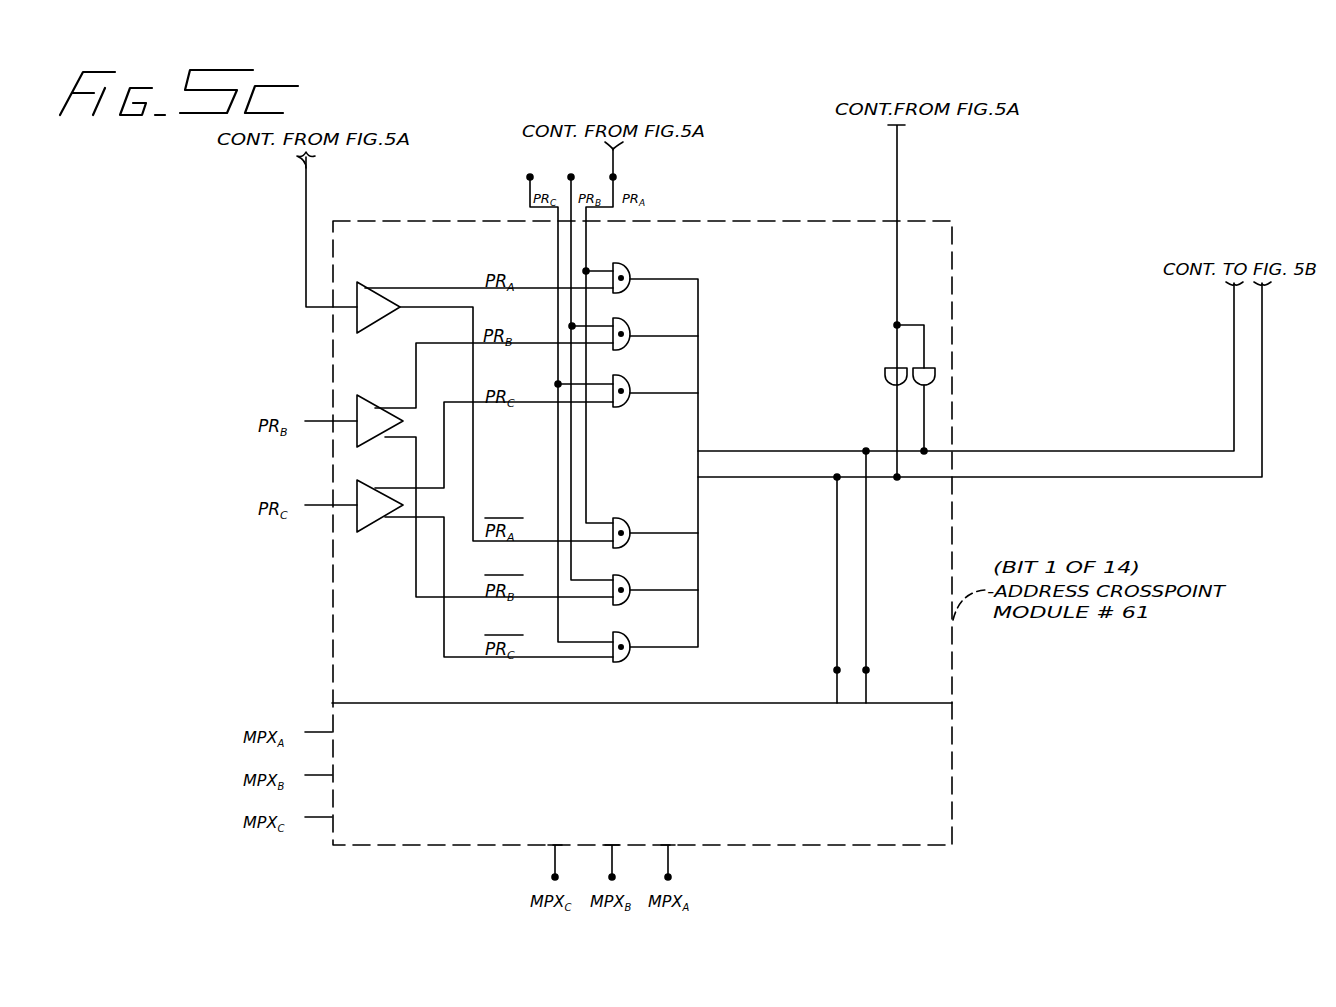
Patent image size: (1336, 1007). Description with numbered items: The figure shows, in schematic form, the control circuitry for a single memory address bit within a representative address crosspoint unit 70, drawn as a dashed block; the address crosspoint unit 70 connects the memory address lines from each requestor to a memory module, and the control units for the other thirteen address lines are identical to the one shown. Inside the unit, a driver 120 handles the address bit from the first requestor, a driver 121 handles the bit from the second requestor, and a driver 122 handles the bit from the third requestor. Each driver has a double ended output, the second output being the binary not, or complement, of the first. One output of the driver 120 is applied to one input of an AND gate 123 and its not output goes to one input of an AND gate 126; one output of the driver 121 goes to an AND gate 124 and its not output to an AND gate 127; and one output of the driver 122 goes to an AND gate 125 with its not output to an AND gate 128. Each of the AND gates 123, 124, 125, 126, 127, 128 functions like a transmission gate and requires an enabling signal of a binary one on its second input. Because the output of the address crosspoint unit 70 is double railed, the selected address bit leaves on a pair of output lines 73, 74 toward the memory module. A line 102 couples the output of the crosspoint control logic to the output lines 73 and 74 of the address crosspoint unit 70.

The address crosspoint unit 70 is at (953, 733).
The output line 73 is at (1030, 450).
The output line 74 is at (1067, 478).
The line 102 is at (897, 138).
The driver 120 is at (363, 292).
The driver 121 is at (360, 400).
The driver 122 is at (360, 485).
The AND gate 123 is at (627, 291).
The AND gate 124 is at (627, 348).
The AND gate 125 is at (627, 405).
The AND gate 126 is at (630, 524).
The AND gate 127 is at (630, 581).
The AND gate 128 is at (630, 638).